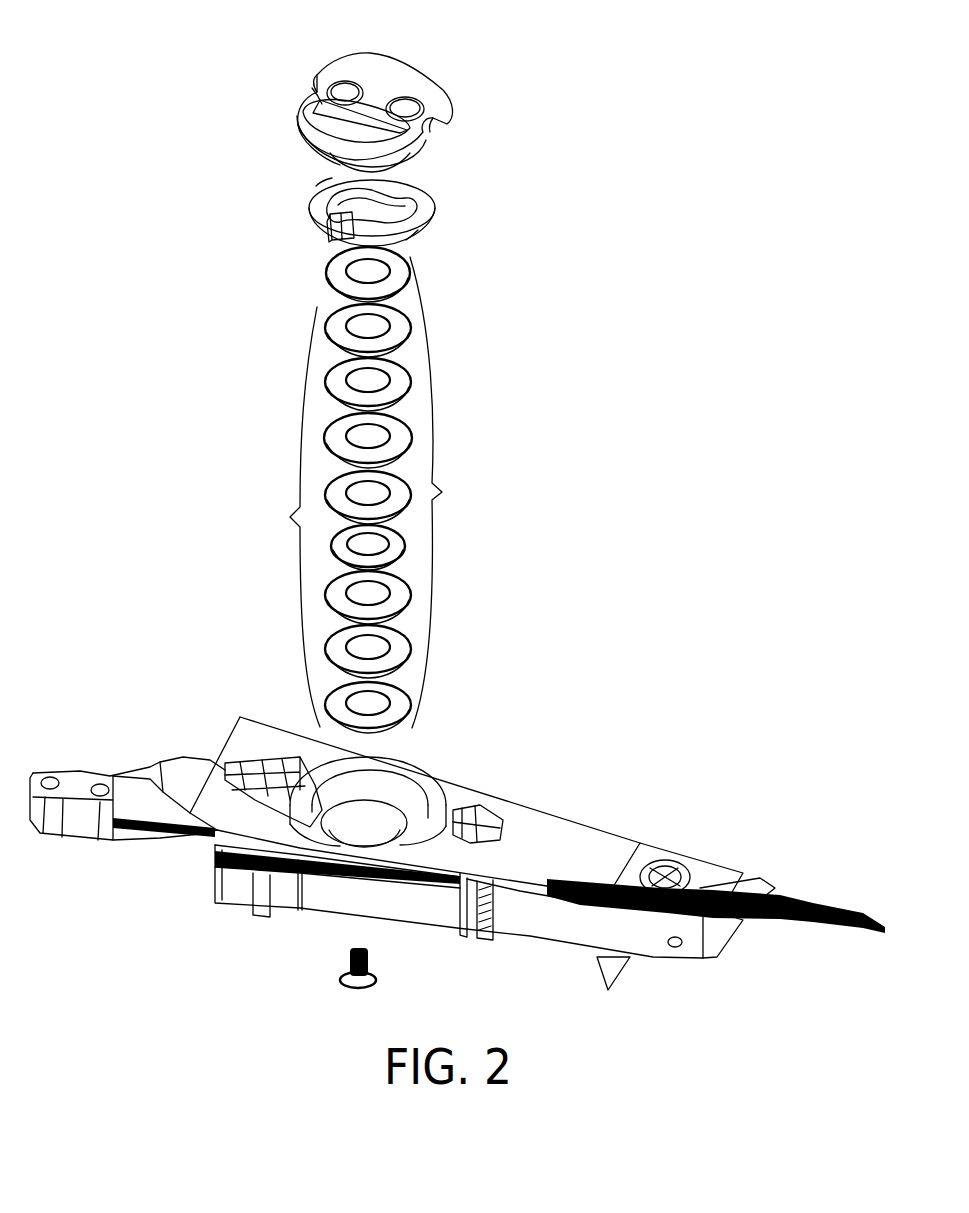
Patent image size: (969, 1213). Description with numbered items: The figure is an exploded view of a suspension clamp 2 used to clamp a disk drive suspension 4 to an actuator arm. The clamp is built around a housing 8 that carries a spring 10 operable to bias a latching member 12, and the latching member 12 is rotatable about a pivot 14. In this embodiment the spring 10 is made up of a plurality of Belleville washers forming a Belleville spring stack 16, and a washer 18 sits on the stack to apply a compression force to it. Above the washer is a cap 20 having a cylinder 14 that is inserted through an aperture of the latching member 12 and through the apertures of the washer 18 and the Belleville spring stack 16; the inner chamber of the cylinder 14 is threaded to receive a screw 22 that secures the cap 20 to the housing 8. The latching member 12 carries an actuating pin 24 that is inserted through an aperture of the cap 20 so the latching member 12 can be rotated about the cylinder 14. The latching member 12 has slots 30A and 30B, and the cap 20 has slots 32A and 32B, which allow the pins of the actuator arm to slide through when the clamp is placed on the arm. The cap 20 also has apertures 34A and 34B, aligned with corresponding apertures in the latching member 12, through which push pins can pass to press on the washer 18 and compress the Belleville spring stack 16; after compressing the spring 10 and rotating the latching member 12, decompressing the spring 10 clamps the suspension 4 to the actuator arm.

The suspension clamp 2 is at (524, 92).
The disk drive suspension 4 is at (793, 898).
The housing 8 is at (444, 776).
The spring 10 is at (367, 495).
The latching member 12 is at (436, 209).
The pivot / cylinder 14 is at (393, 162).
The Belleville spring stack 16 is at (338, 518).
The washer 18 is at (328, 273).
The cap 20 is at (388, 63).
The screw 22 is at (336, 977).
The actuating pin 24 is at (330, 238).
The slot of latching member 30A is at (328, 181).
The slot of latching member 30B is at (414, 242).
The slot of cap 32A is at (307, 88).
The slot of cap 32B is at (436, 128).
The aperture of cap 34A is at (336, 89).
The aperture of cap 34B is at (404, 99).